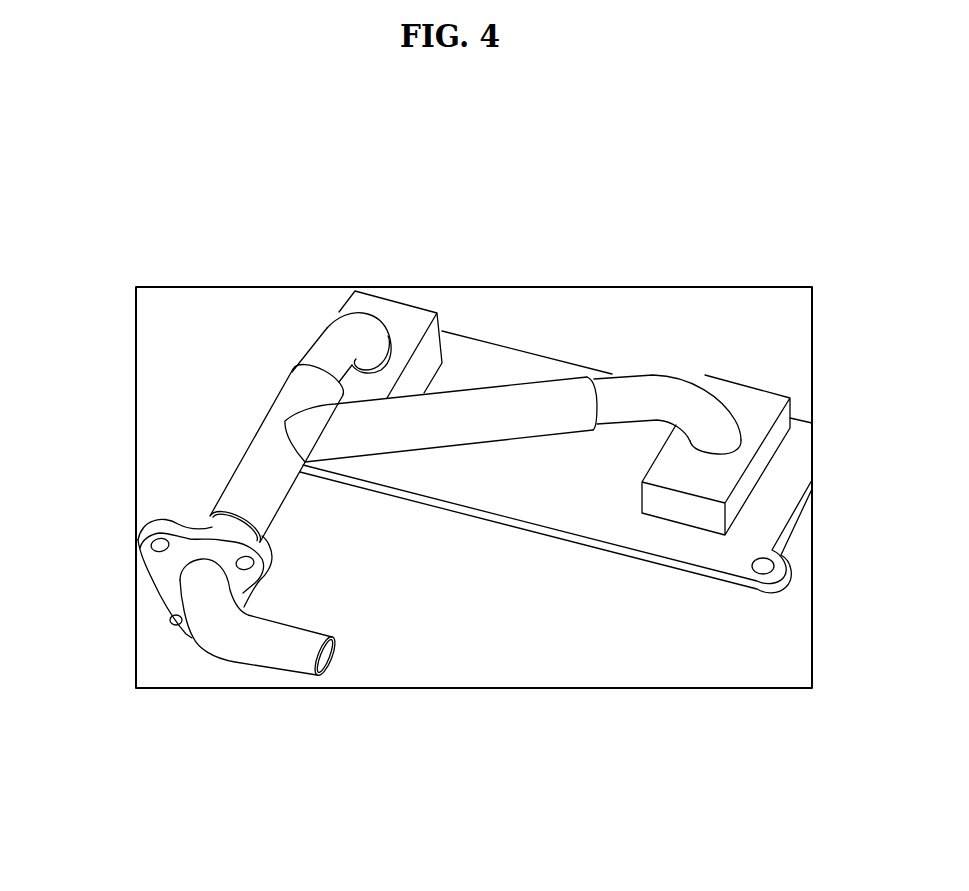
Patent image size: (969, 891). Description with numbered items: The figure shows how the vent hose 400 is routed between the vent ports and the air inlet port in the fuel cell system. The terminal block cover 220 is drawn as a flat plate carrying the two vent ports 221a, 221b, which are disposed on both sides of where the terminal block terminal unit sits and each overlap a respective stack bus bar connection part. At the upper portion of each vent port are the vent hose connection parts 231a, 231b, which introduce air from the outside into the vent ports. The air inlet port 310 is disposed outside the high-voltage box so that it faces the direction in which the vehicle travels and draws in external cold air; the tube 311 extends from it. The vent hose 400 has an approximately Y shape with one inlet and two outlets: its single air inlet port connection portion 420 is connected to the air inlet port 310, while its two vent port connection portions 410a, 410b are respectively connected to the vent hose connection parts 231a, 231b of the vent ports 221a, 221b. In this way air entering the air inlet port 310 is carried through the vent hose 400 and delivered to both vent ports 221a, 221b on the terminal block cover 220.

The terminal block cover 220 is at (775, 523).
The vent port 221a is at (393, 312).
The vent port 221b is at (752, 407).
The vent hose connection part 231a is at (327, 347).
The vent hose connection part 231b is at (658, 392).
The air inlet port 310 is at (220, 622).
The outlet pipe 311 is at (325, 656).
The vent hose 400 is at (485, 453).
The vent port connection portion 410a is at (300, 387).
The vent port connection portion 410b is at (567, 395).
The air inlet port connection portion 420 is at (250, 490).